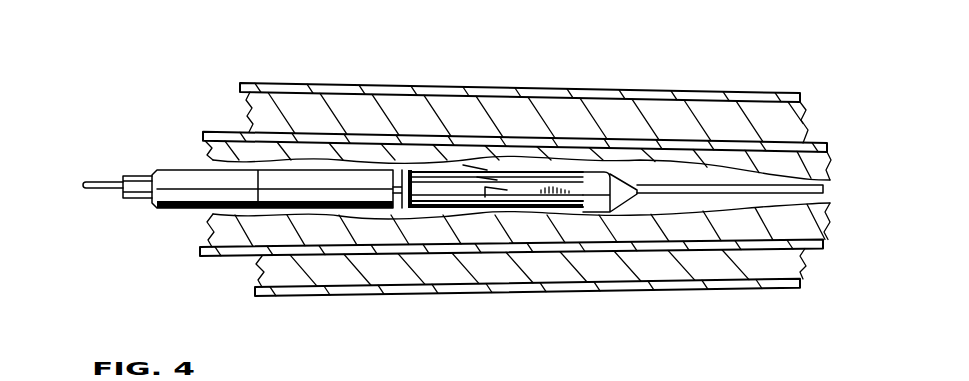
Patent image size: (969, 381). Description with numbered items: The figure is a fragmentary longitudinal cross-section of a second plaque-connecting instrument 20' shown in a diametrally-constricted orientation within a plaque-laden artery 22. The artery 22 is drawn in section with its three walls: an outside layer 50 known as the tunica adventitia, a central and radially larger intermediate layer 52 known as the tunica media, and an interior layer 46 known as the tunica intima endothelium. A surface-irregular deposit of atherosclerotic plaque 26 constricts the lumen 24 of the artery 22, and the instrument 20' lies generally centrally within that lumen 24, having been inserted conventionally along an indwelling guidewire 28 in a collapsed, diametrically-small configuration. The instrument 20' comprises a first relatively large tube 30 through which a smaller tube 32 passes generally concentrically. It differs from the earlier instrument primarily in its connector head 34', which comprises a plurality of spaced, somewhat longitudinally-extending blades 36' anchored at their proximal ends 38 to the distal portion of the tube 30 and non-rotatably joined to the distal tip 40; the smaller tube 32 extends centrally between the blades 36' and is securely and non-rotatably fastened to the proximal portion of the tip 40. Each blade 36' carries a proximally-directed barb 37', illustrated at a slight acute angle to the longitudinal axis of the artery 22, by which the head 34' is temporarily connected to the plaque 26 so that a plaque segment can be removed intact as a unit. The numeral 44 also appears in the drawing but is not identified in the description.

The instrument 20' is at (405, 96).
The artery 22 is at (533, 78).
The lumen 24 is at (707, 180).
The plaque 26 is at (820, 162).
The guidewire 28 is at (110, 182).
The first relatively large tube 30 is at (174, 170).
The smaller tube 32 is at (140, 176).
The connector head 34' is at (499, 267).
The blade 36' is at (497, 112).
The barb 37' is at (499, 256).
The proximal portion 38 is at (398, 210).
The distal tip 40 is at (620, 170).
The inner lining 44 is at (568, 148).
The interior layer 46 is at (222, 133).
The outside layer 50 is at (266, 83).
The intermediate layer 52 is at (306, 110).